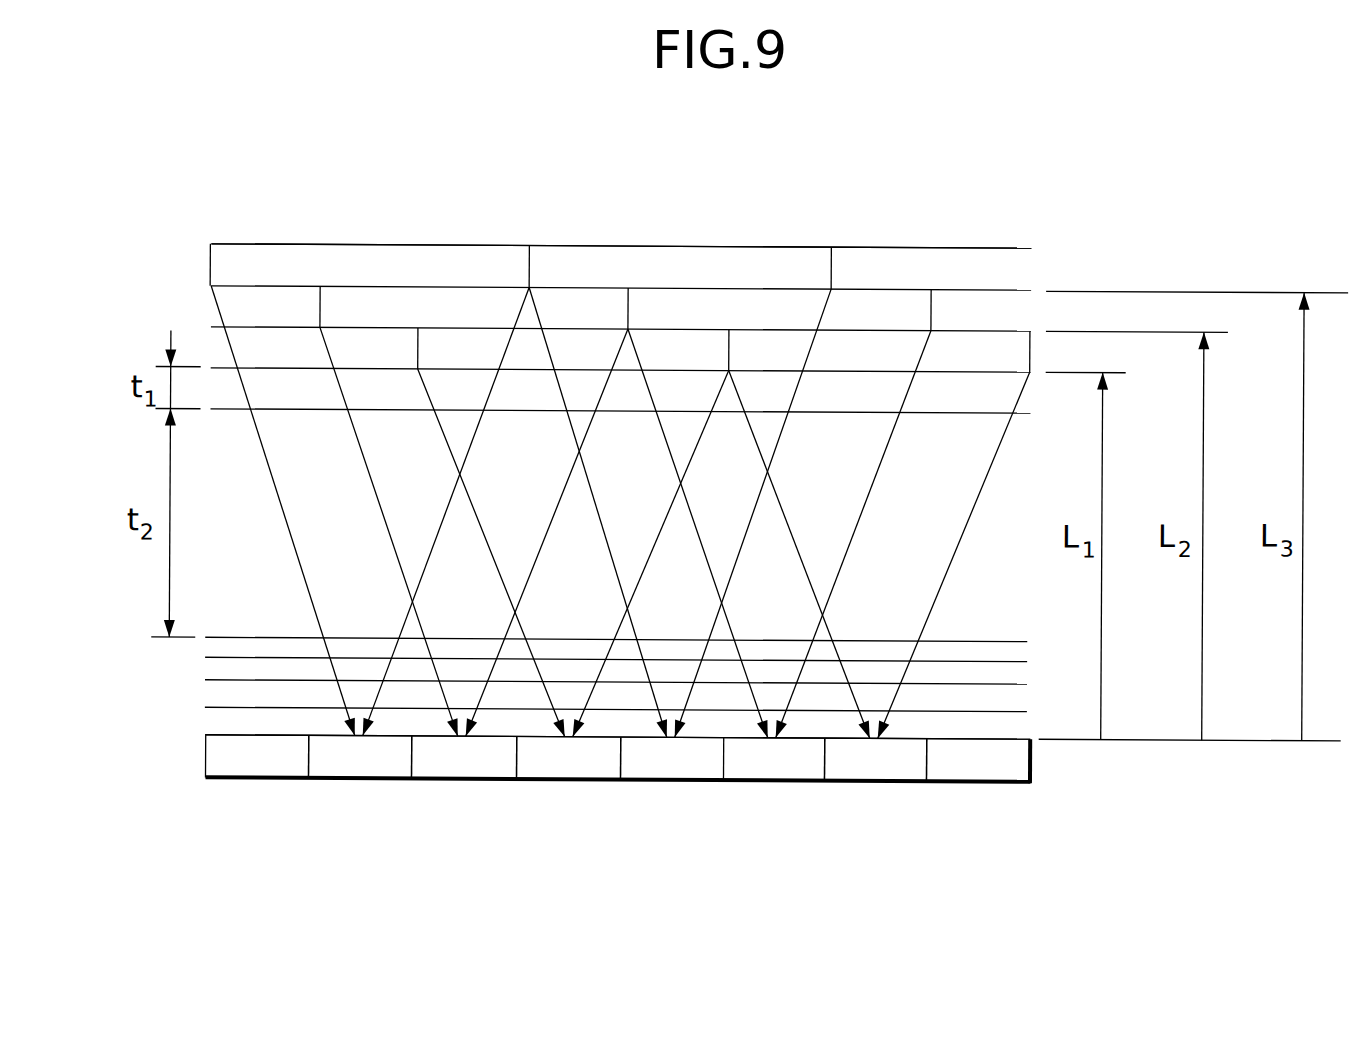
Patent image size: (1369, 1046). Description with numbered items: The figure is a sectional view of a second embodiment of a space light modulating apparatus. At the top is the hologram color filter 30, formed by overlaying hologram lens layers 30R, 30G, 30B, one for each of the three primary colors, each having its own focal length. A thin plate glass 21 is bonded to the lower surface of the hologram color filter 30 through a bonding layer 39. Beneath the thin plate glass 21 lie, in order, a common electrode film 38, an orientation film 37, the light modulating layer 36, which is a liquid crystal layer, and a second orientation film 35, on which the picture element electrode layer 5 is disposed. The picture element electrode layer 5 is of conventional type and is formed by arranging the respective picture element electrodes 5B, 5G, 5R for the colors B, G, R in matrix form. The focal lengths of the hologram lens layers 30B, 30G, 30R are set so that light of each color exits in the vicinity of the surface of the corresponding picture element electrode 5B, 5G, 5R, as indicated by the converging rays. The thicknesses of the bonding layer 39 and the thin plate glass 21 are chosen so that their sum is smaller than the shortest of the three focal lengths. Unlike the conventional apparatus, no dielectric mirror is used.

The picture element electrode layer 5 is at (1050, 774).
The picture element electrode 5R is at (699, 783).
The picture element electrode 5G is at (811, 783).
The picture element electrode 5B is at (908, 783).
The thin plate glass 21 is at (226, 590).
The hologram color filter 30 is at (1117, 150).
The hologram lens layer 30R is at (807, 257).
The hologram lens layer 30G is at (898, 305).
The hologram lens layer 30B is at (990, 345).
The orientation film 35 is at (398, 727).
The light modulating layer 36 is at (298, 694).
The orientation film 37 is at (240, 675).
The common electrode film 38 is at (222, 650).
The bonding layer 39 is at (212, 384).